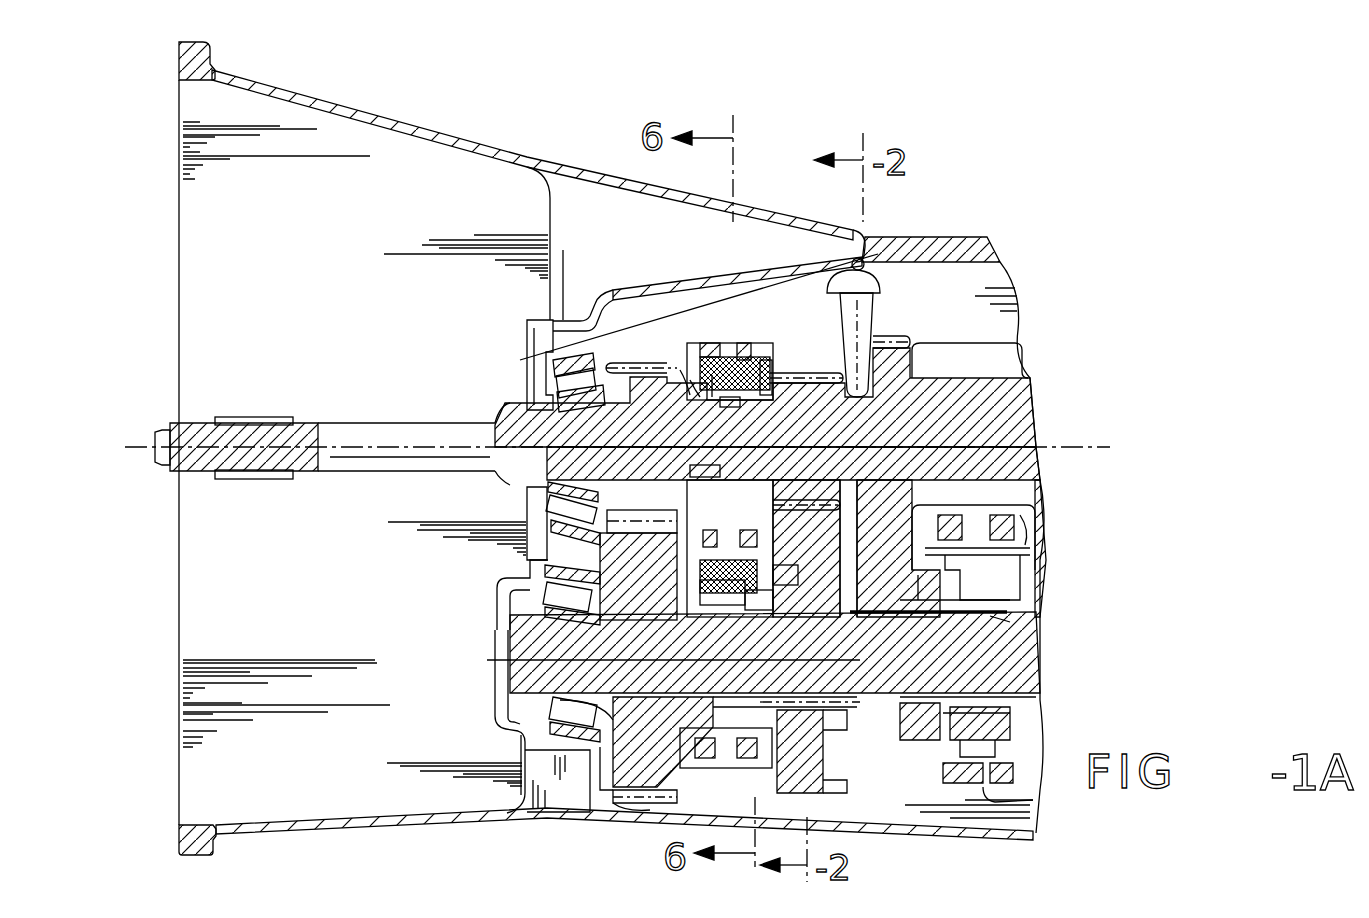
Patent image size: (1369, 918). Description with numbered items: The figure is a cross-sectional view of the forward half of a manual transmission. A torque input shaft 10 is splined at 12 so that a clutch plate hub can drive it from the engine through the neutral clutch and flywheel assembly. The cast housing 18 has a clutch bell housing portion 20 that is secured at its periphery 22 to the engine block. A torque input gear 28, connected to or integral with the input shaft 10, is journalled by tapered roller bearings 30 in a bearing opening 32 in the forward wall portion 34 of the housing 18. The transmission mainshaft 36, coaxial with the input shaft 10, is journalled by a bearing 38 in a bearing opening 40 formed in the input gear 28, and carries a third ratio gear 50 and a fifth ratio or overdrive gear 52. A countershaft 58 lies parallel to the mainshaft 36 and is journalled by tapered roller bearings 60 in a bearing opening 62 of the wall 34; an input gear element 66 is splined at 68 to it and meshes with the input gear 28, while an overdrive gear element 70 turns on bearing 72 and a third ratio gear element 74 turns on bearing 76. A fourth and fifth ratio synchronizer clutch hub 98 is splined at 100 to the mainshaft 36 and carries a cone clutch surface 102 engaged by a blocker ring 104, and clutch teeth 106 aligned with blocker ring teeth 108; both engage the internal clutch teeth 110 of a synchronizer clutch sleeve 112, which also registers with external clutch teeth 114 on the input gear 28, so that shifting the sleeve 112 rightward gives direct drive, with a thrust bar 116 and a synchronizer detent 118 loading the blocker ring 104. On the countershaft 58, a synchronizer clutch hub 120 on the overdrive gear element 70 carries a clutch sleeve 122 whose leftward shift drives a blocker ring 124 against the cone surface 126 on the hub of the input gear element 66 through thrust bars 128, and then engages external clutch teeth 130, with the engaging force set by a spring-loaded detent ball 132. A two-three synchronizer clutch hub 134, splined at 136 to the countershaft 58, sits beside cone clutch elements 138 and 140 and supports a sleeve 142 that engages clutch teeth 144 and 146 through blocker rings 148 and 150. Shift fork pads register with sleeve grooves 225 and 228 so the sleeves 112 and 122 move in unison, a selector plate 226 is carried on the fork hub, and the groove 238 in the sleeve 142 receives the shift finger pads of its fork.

The torque input shaft 10 is at (357, 420).
The splines 12 is at (274, 420).
The cast housing 18 is at (918, 240).
The clutch bell housing portion 20 is at (372, 110).
The periphery 22 is at (208, 56).
The torque input gear 28 is at (615, 292).
The tapered roller bearings 30 is at (548, 372).
The bearing opening 32 is at (545, 342).
The forward wall portion 34 is at (552, 208).
The transmission mainshaft 36 is at (1020, 398).
The bearing 38 is at (668, 362).
The bearing opening 40 is at (540, 490).
The third ratio gear 50 is at (913, 347).
The fifth ratio gear or overdrive gear 52 is at (805, 372).
The countershaft 58 is at (1005, 655).
The tapered roller bearings 60 is at (516, 584).
The bearing opening 62 is at (494, 726).
The input gear element 66 is at (490, 660).
The splines 68 is at (512, 618).
The overdrive gear element 70 is at (890, 620).
The bearing 72 is at (856, 622).
The third ratio gear element 74 is at (922, 600).
The bearing 76 is at (900, 615).
The fourth and fifth ratio synchronizer clutch hub 98 is at (800, 370).
The splines 100 is at (733, 404).
The synchronizer cone clutch surface 102 is at (776, 380).
The synchronizer blocker ring 104 is at (735, 380).
The clutch teeth 106 is at (790, 380).
The synchronizer blocker ring teeth 108 is at (748, 375).
The internal clutch teeth 110 is at (700, 385).
The synchronizer clutch sleeve 112 is at (712, 375).
The external clutch teeth 114 is at (680, 370).
The thrust bar 116 is at (808, 622).
The synchronizer detent 118 is at (702, 590).
The synchronizer clutch hub 120 is at (722, 775).
The synchronizer clutch sleeve 122 is at (728, 748).
The synchronizer blocker ring 124 is at (688, 745).
The synchronizer clutch cone surface 126 is at (690, 713).
The thrust bars 128 is at (697, 624).
The external clutch teeth 130 is at (650, 805).
The spring-loaded detent ball 132 is at (755, 622).
The 2-3 synchronizer clutch hub 134 is at (1015, 602).
The splines 136 is at (1010, 615).
The synchronizer cone clutch element 138 is at (1005, 663).
The synchronizer cone clutch element 140 is at (1020, 570).
The 2-3 synchronizer clutch sleeve 142 is at (1030, 525).
The synchronizer clutch teeth 144 is at (1020, 492).
The synchronizer clutch teeth 146 is at (1040, 548).
The blocker ring 148 is at (1036, 507).
The blocker ring 150 is at (1045, 540).
The synchronizer clutch sleeve groove 225 is at (700, 468).
The selector plate 226 is at (832, 552).
The synchronizer clutch sleeve groove 228 is at (812, 579).
The synchronizer clutch sleeve groove 238 is at (1036, 810).